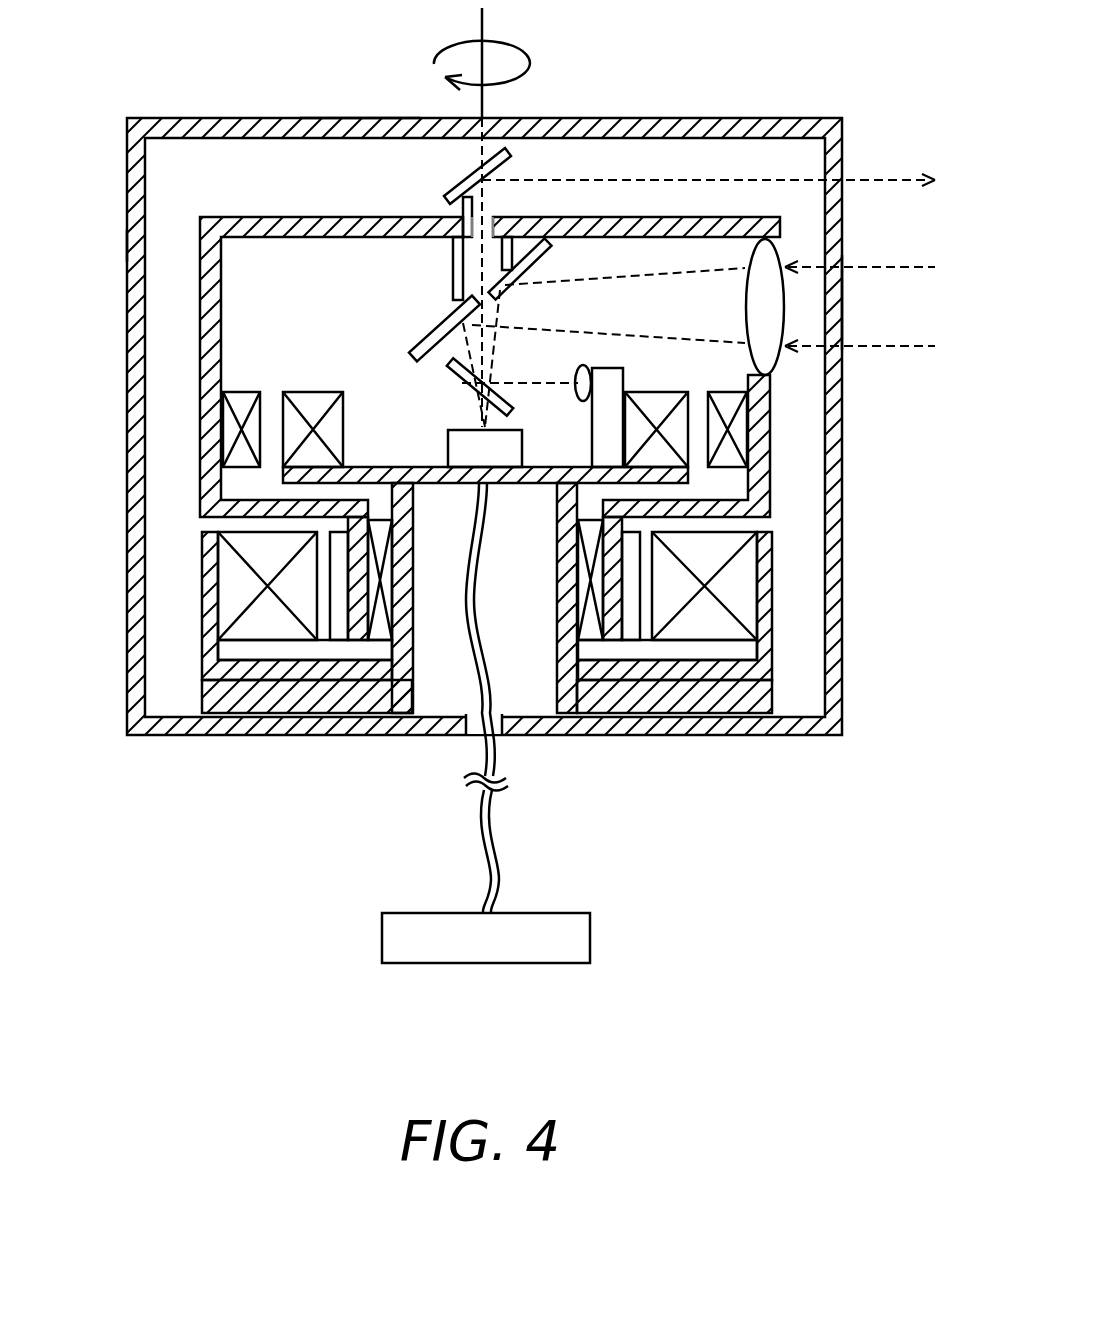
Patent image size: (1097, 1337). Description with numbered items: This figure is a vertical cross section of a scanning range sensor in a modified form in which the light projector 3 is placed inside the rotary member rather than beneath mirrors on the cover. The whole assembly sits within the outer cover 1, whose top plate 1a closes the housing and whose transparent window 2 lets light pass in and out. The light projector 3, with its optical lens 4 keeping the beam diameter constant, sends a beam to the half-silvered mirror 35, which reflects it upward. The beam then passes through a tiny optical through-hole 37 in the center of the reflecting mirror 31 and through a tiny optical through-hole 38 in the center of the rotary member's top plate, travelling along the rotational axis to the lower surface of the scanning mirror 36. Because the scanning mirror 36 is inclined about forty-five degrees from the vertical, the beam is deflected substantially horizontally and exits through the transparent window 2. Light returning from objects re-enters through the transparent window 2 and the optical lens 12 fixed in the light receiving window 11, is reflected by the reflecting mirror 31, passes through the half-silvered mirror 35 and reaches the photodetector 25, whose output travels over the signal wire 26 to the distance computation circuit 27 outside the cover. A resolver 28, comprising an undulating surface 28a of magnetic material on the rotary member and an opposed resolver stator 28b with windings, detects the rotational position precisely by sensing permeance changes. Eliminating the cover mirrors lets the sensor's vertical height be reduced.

The outer cover 1 is at (843, 573).
The top plate 1a is at (352, 118).
The transparent window 2 is at (127, 243).
The light projector 3 is at (597, 437).
The optical lens 4 is at (577, 372).
The light receiving window 11 is at (783, 243).
The optical lens 12 is at (772, 317).
The photodetector 25 is at (448, 447).
The signal wire 26 is at (493, 822).
The distance computation circuit 27 is at (486, 938).
The resolver 28 is at (487, 494).
The undulating surface 28a is at (245, 391).
The resolver stator 28b is at (286, 373).
The reflecting mirror 31 is at (434, 318).
The half-silvered mirror 35 is at (466, 382).
The scanning mirror 36 is at (465, 180).
The optical through-hole 37 is at (492, 297).
The optical through-hole 38 is at (488, 218).